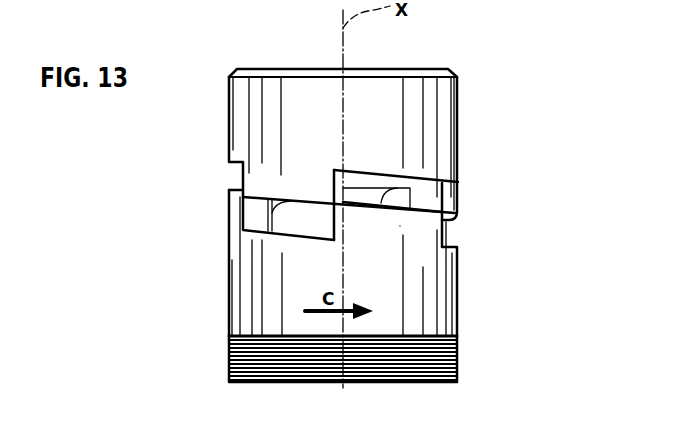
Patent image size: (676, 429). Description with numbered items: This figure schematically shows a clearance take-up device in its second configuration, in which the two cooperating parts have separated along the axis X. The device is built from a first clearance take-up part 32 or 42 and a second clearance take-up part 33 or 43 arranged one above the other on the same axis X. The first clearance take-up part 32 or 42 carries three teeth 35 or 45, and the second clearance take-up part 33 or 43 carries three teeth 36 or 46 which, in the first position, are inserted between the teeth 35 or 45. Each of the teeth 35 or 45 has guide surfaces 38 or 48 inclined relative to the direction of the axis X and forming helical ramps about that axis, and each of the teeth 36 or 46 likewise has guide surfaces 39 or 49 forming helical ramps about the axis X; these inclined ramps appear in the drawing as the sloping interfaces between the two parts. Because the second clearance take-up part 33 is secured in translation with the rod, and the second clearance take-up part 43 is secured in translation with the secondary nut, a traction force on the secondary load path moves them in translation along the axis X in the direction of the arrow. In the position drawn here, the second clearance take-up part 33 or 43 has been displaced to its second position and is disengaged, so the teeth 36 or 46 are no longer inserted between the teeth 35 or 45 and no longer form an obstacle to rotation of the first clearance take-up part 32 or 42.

The first clearance take-up part 32 is at (390, 282).
The first clearance take-up part 42 is at (442, 293).
The second clearance take-up part 33 is at (390, 144).
The second clearance take-up part 43 is at (441, 128).
The teeth 35 is at (442, 224).
The teeth 45 is at (393, 228).
The teeth 36 is at (300, 196).
The teeth 46 is at (292, 189).
The guide surfaces 38 is at (447, 183).
The guide surfaces 48 is at (388, 194).
The guide surfaces 39 is at (233, 224).
The guide surfaces 49 is at (268, 216).